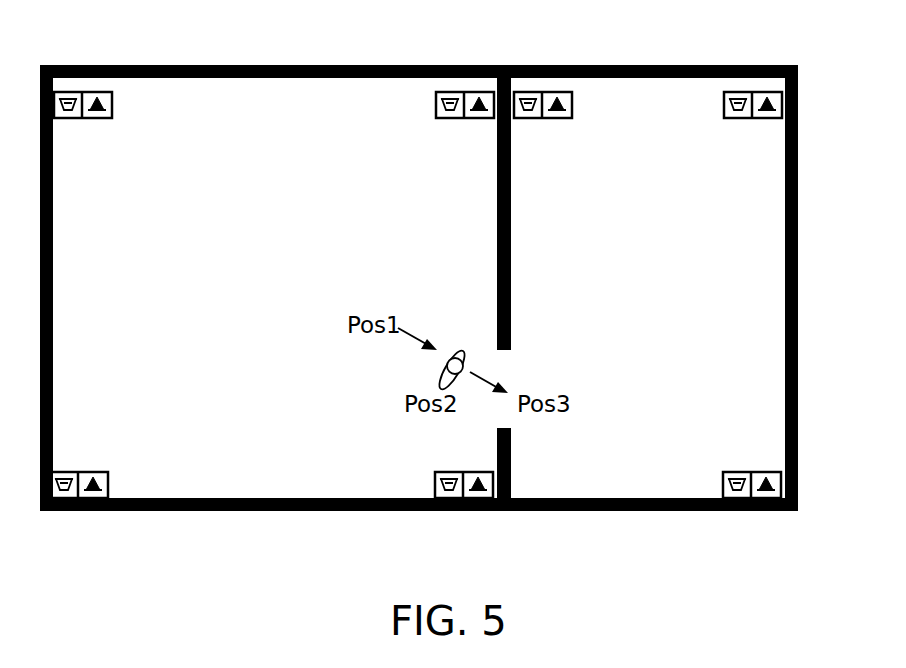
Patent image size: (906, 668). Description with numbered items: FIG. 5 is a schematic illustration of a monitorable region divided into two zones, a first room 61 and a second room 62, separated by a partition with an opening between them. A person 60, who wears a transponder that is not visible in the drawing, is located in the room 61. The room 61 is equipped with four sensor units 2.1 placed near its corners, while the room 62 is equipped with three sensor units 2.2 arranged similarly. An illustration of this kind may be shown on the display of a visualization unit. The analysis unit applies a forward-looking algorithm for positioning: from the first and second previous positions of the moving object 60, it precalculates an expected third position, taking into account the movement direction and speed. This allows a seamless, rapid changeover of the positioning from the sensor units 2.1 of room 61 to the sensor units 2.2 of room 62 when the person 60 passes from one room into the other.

The sensor unit 2.1 is at (88, 92).
The sensor unit 2.2 is at (550, 92).
The person 60 is at (458, 350).
The room 61 is at (195, 485).
The room 62 is at (768, 342).